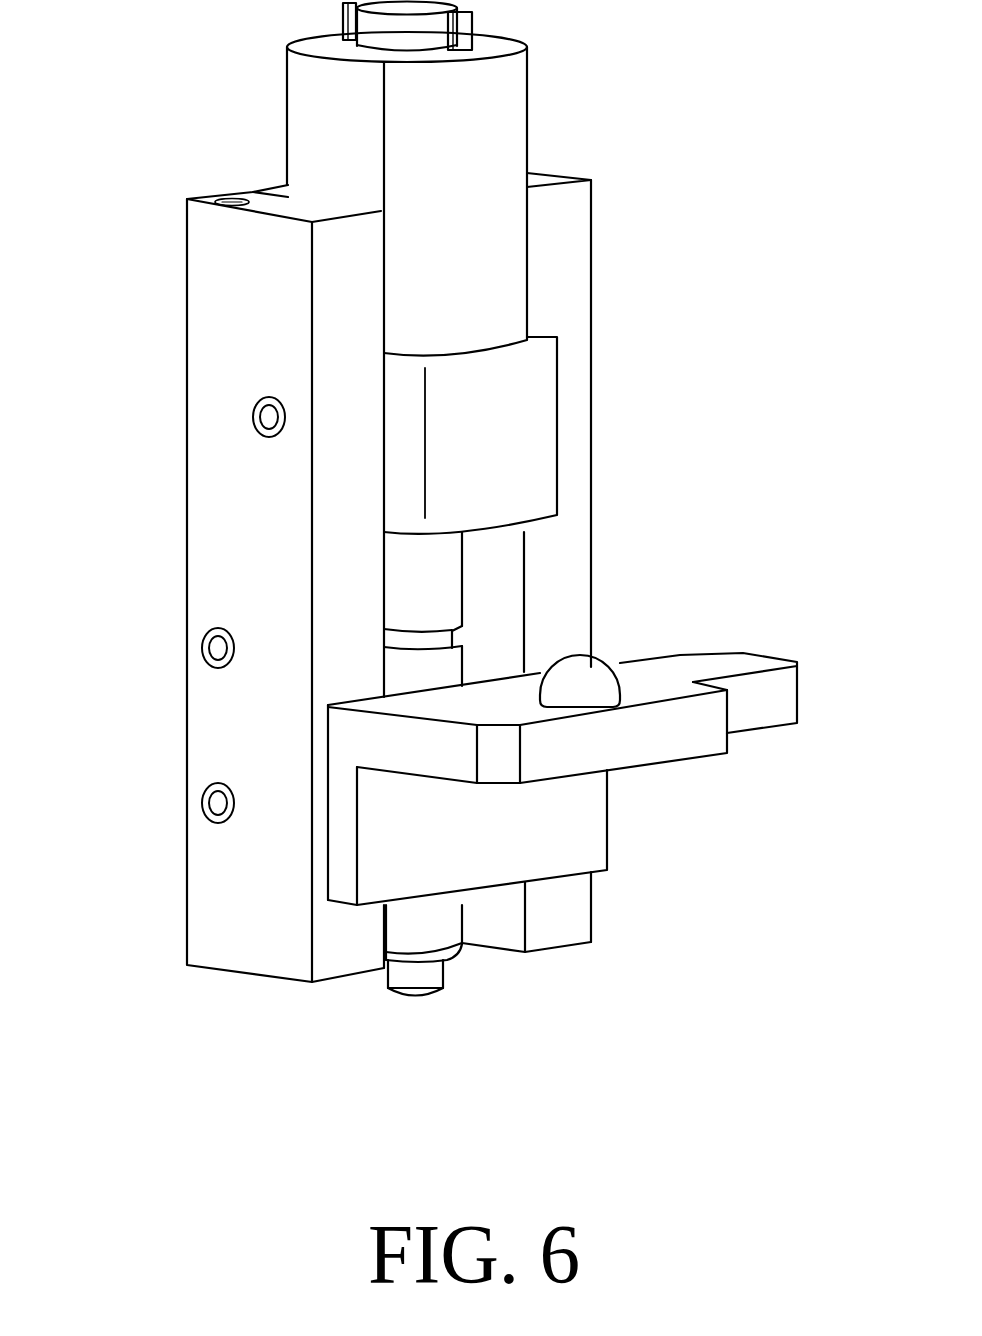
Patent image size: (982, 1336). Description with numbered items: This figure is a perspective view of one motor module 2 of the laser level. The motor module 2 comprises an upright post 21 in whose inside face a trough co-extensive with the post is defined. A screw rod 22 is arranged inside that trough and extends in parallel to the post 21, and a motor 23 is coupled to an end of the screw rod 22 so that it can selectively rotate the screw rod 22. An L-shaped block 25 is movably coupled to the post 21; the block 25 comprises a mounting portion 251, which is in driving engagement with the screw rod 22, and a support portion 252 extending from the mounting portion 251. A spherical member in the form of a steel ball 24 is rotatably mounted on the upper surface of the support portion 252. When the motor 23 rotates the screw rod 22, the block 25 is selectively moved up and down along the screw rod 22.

The motor module 2 is at (645, 272).
The upright post 21 is at (250, 728).
The screw rod 22 is at (430, 682).
The motor 23 is at (473, 468).
The steel ball 24 is at (580, 678).
The L-shaped block 25 is at (445, 877).
The mounting portion 251 is at (410, 835).
The support portion 252 is at (573, 738).